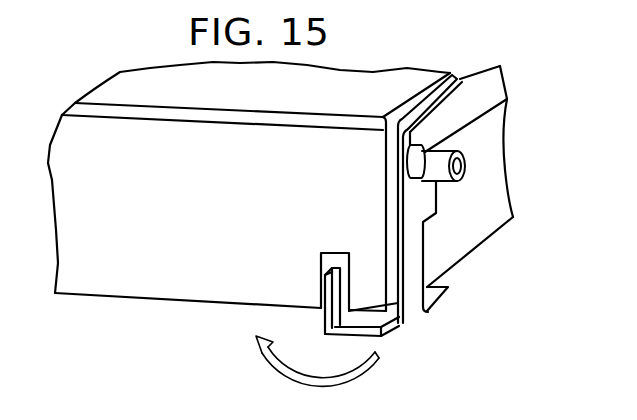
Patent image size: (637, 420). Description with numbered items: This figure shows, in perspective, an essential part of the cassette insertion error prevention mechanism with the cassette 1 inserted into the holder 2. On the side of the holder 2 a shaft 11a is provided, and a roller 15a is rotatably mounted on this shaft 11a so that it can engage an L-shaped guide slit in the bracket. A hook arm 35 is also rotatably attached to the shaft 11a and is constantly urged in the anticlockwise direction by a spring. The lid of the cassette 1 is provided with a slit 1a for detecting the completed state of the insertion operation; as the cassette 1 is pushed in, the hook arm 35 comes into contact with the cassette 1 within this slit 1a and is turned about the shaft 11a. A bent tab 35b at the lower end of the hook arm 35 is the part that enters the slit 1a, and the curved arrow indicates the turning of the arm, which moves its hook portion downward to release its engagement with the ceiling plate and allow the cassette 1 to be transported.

The cassette 1 is at (110, 300).
The slit 1a is at (330, 261).
The holder 2 is at (487, 242).
The shaft 11a is at (465, 173).
The roller 15a is at (467, 158).
The hook arm 35 is at (415, 313).
The bent tab of clamp strap 35b is at (325, 313).